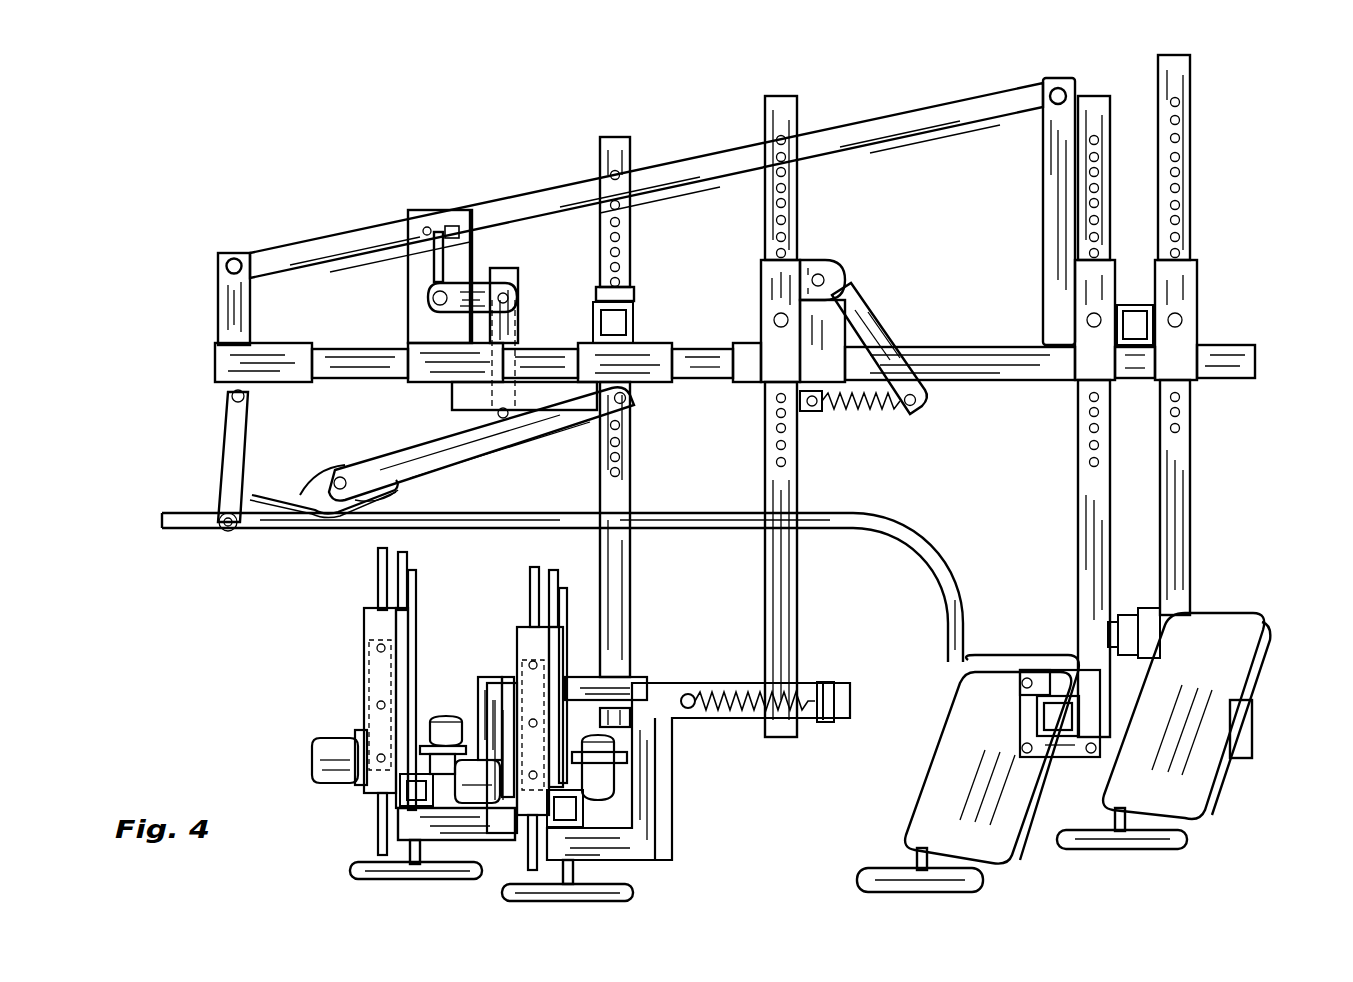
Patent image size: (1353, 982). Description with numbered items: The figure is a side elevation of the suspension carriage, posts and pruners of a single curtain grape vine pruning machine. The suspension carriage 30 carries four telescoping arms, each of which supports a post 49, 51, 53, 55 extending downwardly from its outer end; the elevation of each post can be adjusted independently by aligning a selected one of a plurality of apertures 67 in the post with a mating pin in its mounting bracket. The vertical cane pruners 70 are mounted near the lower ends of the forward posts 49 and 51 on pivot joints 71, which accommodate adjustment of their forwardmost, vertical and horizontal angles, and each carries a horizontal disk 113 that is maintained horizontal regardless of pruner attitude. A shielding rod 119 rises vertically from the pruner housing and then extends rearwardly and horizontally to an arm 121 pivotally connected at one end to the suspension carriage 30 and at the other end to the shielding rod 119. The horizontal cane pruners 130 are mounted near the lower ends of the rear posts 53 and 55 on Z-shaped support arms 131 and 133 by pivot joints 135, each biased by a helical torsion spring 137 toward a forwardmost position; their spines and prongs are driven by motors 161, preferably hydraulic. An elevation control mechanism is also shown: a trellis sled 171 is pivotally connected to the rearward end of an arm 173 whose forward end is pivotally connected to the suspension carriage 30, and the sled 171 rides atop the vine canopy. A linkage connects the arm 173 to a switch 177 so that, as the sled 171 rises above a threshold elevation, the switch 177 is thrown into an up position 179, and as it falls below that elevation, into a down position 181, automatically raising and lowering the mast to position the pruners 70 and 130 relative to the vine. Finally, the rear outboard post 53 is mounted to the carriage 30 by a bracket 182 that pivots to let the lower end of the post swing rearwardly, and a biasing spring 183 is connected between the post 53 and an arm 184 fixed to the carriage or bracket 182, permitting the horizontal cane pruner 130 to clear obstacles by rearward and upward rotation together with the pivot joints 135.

The suspension carriage 30 is at (1243, 297).
The post 49 is at (1175, 63).
The post 51 is at (1100, 103).
The post 53 is at (797, 100).
The post 55 is at (612, 140).
The apertures 67 is at (786, 216).
The vertical cane pruner 70 is at (1022, 855).
The pivot joint 71 is at (1057, 688).
The horizontal disk 113 is at (865, 880).
The shielding rod 119 is at (908, 538).
The arm 121 is at (232, 462).
The horizontal cane pruner 130 is at (350, 571).
The Z-shaped support arm 131 is at (645, 836).
The Z-shaped support arm 133 is at (472, 830).
The pivot joint 135 is at (832, 680).
The helical torsion spring 137 is at (748, 698).
The motor 161 is at (325, 750).
The trellis sled 171 is at (395, 493).
The arm 173 is at (410, 460).
The switch 177 is at (434, 260).
The up position 179 is at (427, 227).
The down position 181 is at (452, 226).
The bracket 182 is at (776, 288).
The biasing spring 183 is at (860, 410).
The arm 184 is at (878, 333).